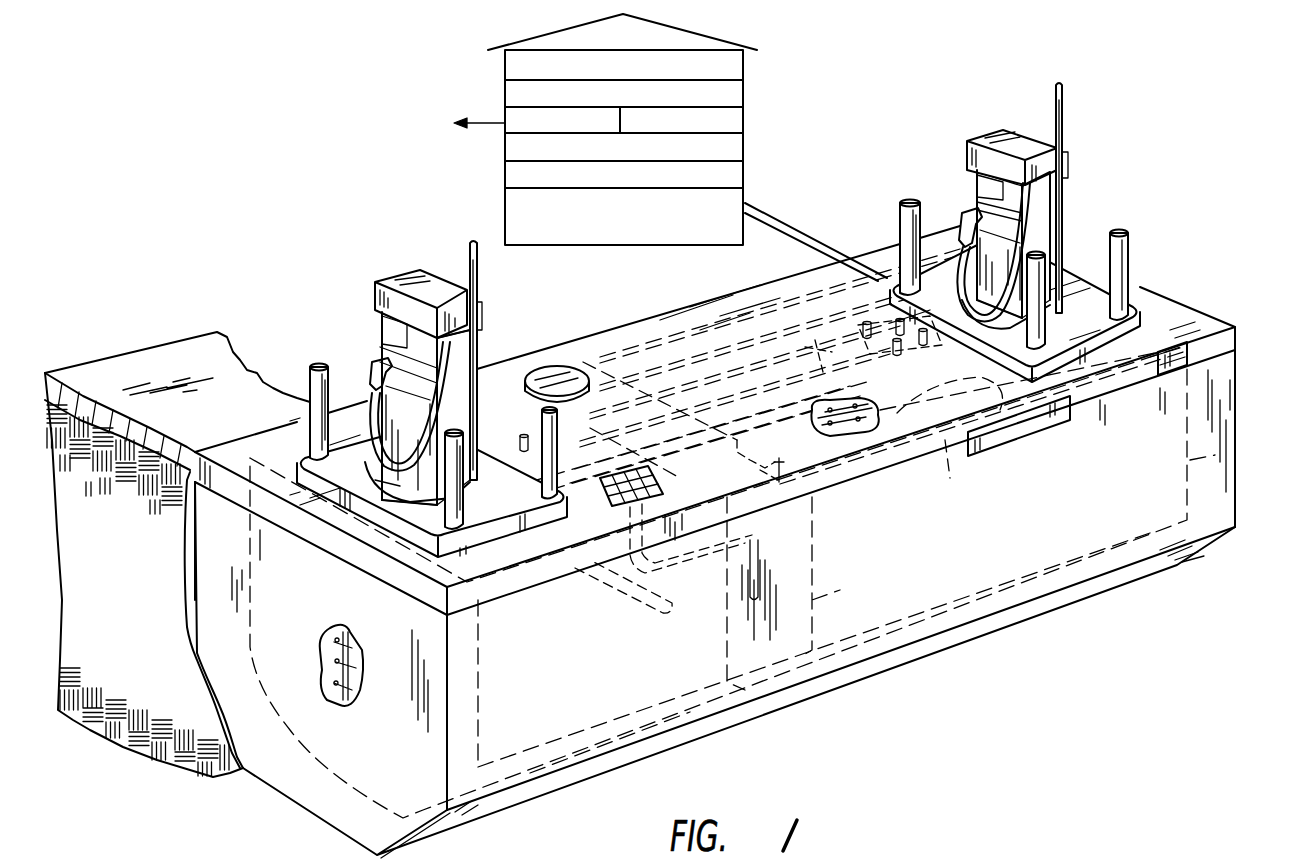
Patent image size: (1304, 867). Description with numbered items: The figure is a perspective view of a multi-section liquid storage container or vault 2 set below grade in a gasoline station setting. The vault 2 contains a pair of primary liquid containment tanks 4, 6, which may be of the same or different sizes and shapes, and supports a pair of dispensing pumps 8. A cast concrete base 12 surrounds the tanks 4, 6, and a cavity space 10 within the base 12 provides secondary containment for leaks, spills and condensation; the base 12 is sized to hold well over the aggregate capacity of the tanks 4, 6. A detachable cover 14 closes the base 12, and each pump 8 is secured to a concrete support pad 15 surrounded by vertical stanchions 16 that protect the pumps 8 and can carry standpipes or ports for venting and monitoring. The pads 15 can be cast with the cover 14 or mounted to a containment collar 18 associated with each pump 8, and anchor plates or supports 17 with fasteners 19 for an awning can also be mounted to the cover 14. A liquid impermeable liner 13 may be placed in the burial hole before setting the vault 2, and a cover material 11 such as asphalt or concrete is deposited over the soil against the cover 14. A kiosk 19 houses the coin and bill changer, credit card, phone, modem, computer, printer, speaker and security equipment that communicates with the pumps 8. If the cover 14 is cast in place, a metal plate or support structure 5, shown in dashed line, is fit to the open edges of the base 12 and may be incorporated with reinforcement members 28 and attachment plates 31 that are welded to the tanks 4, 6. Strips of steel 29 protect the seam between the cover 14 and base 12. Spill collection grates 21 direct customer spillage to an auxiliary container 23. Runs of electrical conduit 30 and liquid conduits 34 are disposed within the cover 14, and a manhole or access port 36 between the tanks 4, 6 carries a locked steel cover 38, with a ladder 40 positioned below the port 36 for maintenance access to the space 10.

The vault 2 is at (1162, 200).
The primary liquid containment tank 4 is at (207, 668).
The metal plate or support structure 5 is at (947, 467).
The primary liquid containment tank 6 is at (1240, 450).
The dispensing pump 8 is at (400, 268).
The cavity space 10 is at (826, 510).
The cover material 11 is at (178, 443).
The cast concrete base 12 is at (1237, 370).
The liquid impermeable liner 13 is at (187, 518).
The detachable cover 14 is at (1207, 318).
The concrete support pad 15 is at (253, 446).
The vertical stanchion 16 is at (308, 367).
The anchor plate or support 17 is at (519, 437).
The containment collar 18 is at (300, 440).
The kiosk 19 is at (743, 78).
The spill collection grate 21 is at (640, 478).
The auxiliary container 23 is at (778, 668).
The reinforcement member 28 is at (880, 408).
The strip of steel 29 is at (1016, 452).
The electrical conduit 30 is at (735, 363).
The attachment plate 31 is at (738, 442).
The liquid conduit 34 is at (803, 329).
The manhole or access port 36 is at (538, 365).
The steel cover 38 is at (553, 372).
The ladder 40 is at (597, 364).